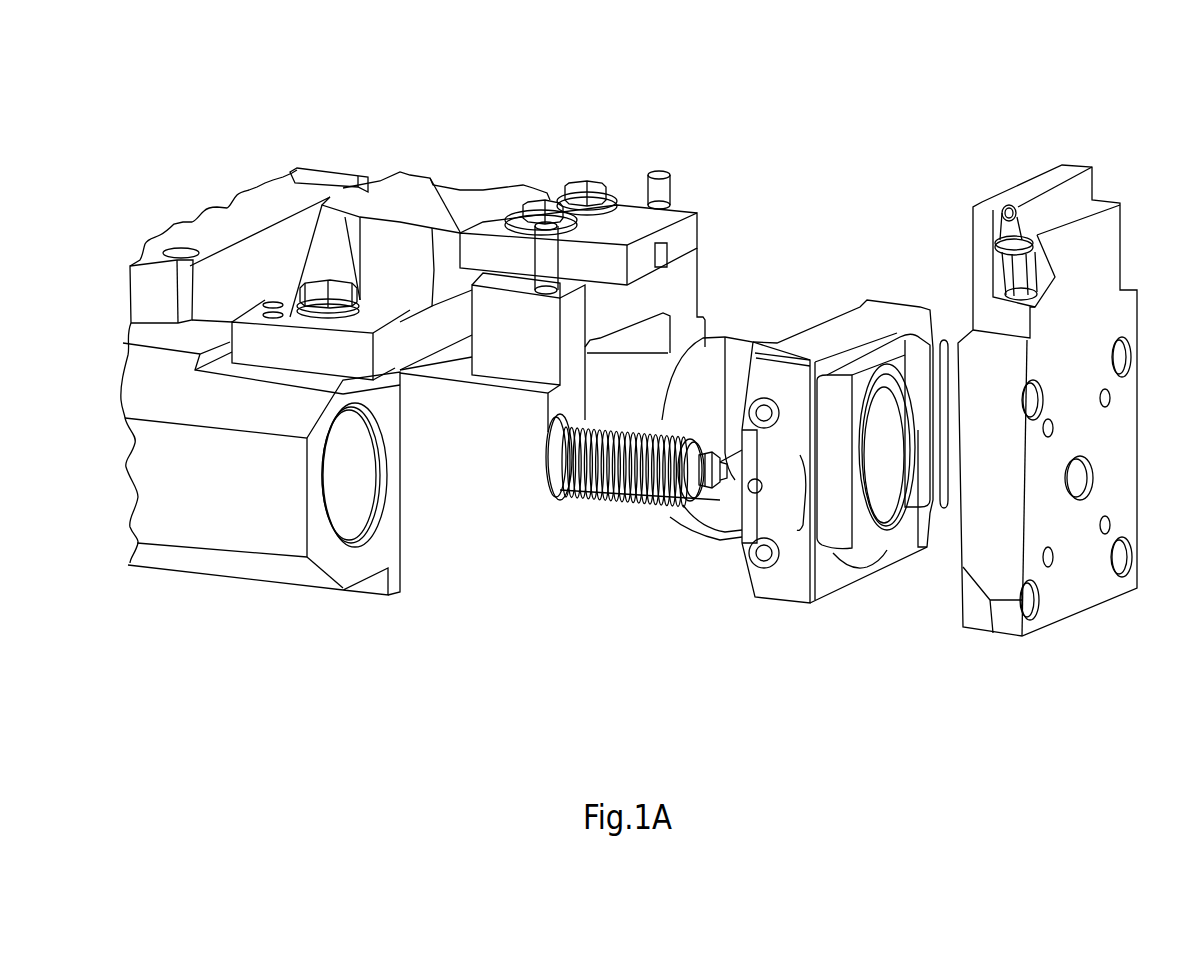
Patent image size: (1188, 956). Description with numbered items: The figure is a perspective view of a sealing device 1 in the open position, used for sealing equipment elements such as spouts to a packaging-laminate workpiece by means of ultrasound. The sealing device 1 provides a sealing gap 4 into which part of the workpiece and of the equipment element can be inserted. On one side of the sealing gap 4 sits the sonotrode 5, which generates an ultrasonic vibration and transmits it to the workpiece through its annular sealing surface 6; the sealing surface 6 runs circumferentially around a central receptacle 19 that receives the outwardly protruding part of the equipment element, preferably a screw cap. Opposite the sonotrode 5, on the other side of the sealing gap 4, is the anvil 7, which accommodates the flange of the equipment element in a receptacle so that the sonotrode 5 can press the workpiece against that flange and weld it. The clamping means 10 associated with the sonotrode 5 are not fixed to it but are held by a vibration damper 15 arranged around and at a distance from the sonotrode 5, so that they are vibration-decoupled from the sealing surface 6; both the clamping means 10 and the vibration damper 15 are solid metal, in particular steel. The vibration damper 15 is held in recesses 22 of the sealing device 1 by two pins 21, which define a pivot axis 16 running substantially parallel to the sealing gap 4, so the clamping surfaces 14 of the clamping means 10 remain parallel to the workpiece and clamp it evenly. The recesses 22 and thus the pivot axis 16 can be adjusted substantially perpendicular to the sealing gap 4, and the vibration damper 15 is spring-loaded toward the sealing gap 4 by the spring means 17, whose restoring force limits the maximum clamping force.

The sealing device 1 is at (242, 107).
The sealing gap 4 is at (953, 252).
The sonotrode 5 is at (748, 345).
The sealing surface 6 is at (887, 535).
The anvil 7 is at (1092, 258).
The clamping means 10 is at (913, 357).
The clamping surfaces 14 is at (941, 345).
The vibration damper 15 is at (857, 320).
The pivot axis 16 is at (748, 488).
The spring means 17 is at (587, 490).
The central receptacle 19 is at (869, 474).
The pins 21 is at (752, 492).
The recesses 22 is at (723, 347).